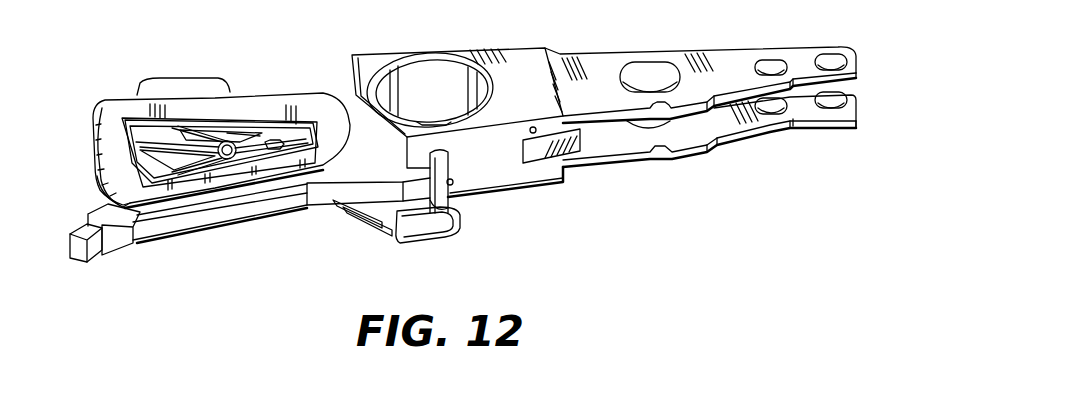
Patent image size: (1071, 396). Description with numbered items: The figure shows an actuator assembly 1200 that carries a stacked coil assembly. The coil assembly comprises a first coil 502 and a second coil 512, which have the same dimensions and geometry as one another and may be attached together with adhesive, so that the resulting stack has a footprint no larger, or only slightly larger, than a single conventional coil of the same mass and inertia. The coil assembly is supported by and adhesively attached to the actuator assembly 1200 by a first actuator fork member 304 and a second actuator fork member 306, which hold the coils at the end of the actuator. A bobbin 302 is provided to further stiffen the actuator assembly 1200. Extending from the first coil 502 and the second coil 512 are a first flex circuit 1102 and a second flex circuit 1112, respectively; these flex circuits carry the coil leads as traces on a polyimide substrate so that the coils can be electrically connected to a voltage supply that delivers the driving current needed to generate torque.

The actuator assembly 1200 is at (382, 27).
The first coil 502 is at (110, 103).
The second actuator fork member 306 is at (193, 80).
The bobbin 302 is at (269, 128).
The second coil 512 is at (98, 189).
The first actuator fork member 304 is at (248, 208).
The second flex circuit 1112 is at (352, 213).
The first flex circuit 1102 is at (379, 233).